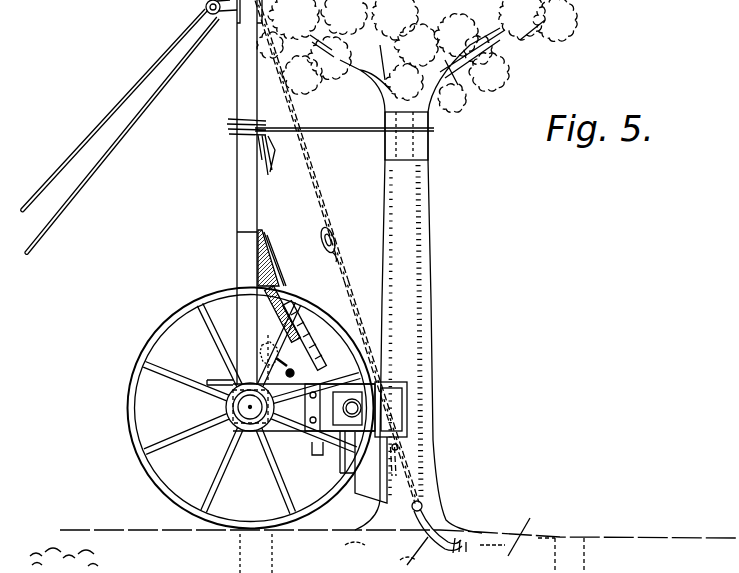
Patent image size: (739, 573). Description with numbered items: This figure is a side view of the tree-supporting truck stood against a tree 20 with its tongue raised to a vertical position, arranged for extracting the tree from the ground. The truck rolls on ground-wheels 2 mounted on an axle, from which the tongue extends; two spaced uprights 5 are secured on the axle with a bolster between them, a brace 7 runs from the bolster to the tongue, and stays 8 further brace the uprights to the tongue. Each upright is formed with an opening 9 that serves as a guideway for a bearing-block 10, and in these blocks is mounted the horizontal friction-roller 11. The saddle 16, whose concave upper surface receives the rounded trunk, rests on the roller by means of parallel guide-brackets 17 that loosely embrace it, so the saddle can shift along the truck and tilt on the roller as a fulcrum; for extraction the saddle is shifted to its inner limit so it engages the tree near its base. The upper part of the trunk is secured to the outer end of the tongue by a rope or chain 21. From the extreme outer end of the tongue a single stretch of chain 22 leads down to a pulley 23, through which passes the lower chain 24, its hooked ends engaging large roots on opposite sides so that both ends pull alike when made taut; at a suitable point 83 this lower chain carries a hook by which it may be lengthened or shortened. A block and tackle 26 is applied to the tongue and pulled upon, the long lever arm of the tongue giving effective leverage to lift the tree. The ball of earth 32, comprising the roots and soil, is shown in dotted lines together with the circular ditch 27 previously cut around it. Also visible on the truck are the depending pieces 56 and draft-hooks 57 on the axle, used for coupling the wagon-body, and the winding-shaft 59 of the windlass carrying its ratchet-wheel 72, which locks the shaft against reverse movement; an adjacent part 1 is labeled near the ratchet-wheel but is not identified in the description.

The lever bar 1 is at (310, 345).
The ground-wheels 2 is at (127, 425).
The uprights 5 is at (407, 408).
The brace 7 is at (237, 203).
The stays 8 is at (294, 338).
The opening 9 is at (393, 395).
The bearing-blocks 10 is at (334, 408).
The friction-roller 11 is at (352, 398).
The saddle 16 is at (374, 490).
The guide-brackets 17 is at (345, 465).
The tree 20 is at (420, 246).
The rope or chain 21 is at (333, 136).
The single stretch of chain 22 is at (318, 196).
The pulley 23 is at (338, 241).
The chain 24 is at (347, 291).
The block and tackle 26 is at (131, 85).
The circular ditch 27 is at (587, 540).
The ball of earth 32 is at (521, 528).
The depending pieces 56 is at (218, 381).
The draft-hooks 57 is at (294, 371).
The winding-shaft 59 is at (258, 357).
The ratchet-wheel 72 is at (281, 358).
The point with hook 83 is at (398, 447).